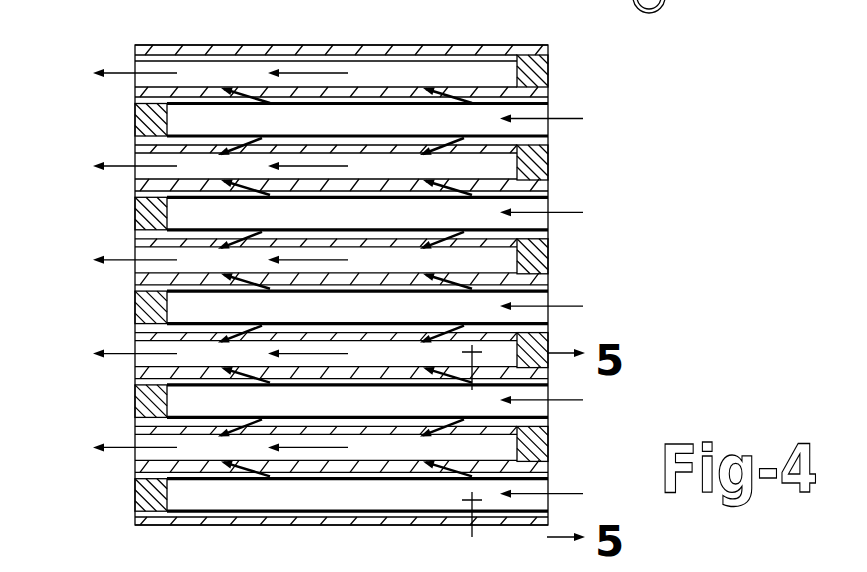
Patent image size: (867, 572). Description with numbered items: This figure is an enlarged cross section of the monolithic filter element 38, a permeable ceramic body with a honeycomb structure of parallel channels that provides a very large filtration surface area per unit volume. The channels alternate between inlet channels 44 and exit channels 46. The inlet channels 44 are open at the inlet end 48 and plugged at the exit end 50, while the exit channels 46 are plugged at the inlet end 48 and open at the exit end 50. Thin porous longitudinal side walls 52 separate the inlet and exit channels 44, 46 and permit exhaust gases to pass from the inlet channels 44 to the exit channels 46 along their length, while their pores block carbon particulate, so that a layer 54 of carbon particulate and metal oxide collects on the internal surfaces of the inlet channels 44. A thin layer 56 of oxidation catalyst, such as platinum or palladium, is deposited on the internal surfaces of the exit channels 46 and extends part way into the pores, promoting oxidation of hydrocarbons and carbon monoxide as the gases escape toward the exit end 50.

The monolithic filter element 38 is at (624, 60).
The inlet channels 44 is at (548, 128).
The exit channels 46 is at (133, 60).
The inlet end 48 is at (551, 78).
The exit end 50 is at (133, 497).
The porous longitudinal side walls 52 is at (396, 185).
The layer of carbon particulate and metal oxide 54 is at (549, 113).
The layer of oxidation catalyst 56 is at (210, 102).